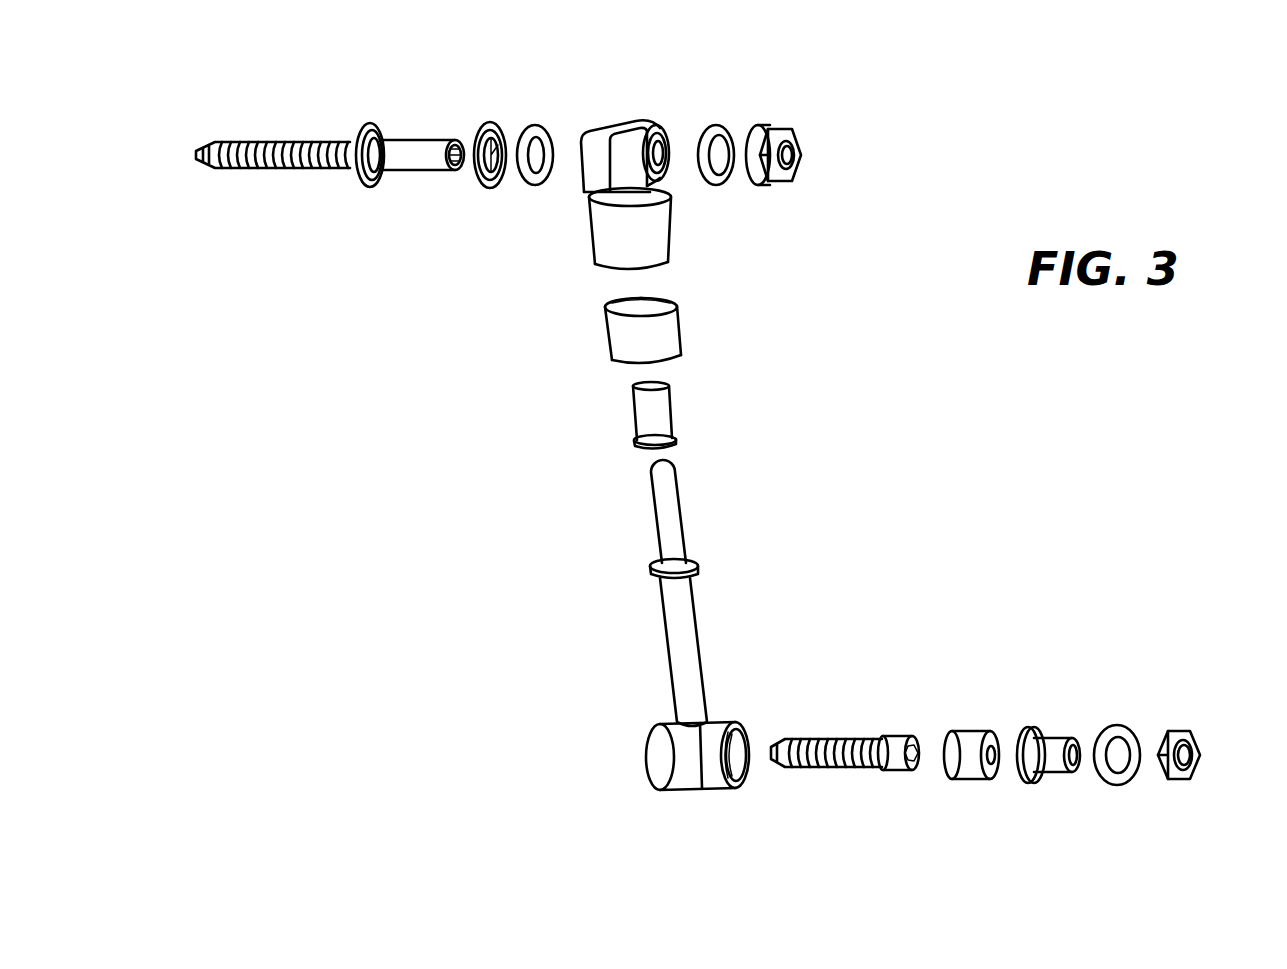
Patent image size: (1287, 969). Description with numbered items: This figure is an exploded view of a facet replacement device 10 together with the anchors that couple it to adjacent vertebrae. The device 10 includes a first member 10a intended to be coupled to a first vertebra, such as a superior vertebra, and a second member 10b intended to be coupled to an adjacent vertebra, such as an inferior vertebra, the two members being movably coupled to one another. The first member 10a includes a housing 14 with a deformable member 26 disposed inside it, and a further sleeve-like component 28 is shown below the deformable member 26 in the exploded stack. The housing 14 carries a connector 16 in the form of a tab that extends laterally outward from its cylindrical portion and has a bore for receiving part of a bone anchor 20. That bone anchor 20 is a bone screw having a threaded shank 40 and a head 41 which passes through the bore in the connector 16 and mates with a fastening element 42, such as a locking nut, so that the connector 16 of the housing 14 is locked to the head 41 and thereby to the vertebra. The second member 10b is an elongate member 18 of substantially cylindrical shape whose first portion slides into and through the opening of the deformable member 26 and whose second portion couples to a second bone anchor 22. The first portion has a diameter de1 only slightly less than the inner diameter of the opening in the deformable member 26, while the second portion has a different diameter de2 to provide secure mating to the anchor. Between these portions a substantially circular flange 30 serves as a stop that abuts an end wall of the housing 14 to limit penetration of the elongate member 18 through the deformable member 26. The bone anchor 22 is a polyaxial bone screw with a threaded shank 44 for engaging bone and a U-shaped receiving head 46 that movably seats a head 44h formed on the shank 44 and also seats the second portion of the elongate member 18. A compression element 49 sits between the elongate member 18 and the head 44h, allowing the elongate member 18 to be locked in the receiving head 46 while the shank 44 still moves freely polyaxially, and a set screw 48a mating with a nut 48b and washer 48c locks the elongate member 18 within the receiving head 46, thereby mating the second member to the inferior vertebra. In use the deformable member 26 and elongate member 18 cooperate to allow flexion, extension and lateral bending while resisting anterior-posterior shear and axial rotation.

The facet replacement device 10 is at (503, 205).
The first member 10a is at (573, 118).
The second member 10b is at (607, 478).
The housing 14 is at (672, 223).
The connector 16 is at (672, 140).
The elongate member 18 is at (677, 485).
The bone anchor 20 is at (807, 78).
The bone anchor 22 is at (1200, 803).
The deformable member 26 is at (682, 325).
The inner sleeve 28 is at (676, 410).
The flange 30 is at (698, 568).
The threaded shank 40 is at (265, 172).
The head 41 is at (418, 168).
The fastening element 42 is at (801, 150).
The threaded shank 44 is at (858, 705).
The head 44h is at (913, 738).
The U-shaped receiving head 46 is at (745, 722).
The set screw 48a is at (1060, 740).
The nut 48b is at (1127, 728).
The washer 48c is at (1188, 731).
The compression element 49 is at (978, 730).
The diameter of first portion de1 is at (655, 517).
The diameter of second portion de2 is at (667, 637).